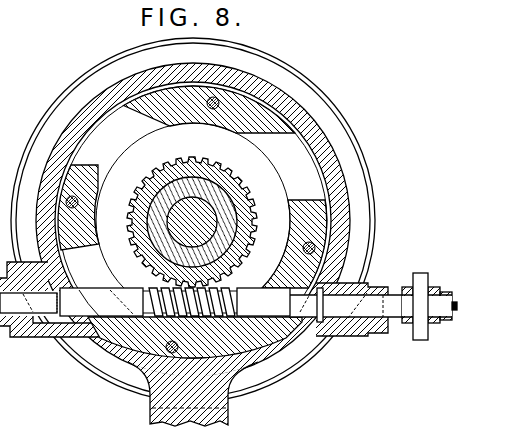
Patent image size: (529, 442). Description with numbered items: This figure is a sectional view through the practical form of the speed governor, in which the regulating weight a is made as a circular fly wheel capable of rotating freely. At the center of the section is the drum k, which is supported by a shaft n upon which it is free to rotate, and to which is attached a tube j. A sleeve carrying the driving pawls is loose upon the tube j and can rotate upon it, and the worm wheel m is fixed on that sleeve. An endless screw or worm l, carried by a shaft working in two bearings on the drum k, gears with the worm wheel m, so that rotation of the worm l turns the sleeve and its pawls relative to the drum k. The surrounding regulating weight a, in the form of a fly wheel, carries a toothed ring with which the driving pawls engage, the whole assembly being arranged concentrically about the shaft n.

The drum k is at (40, 217).
The regulating weight a is at (192, 222).
The endless screw or worm l is at (244, 314).
The worm wheel m is at (197, 160).
The tube j is at (232, 206).
The shaft n is at (212, 238).